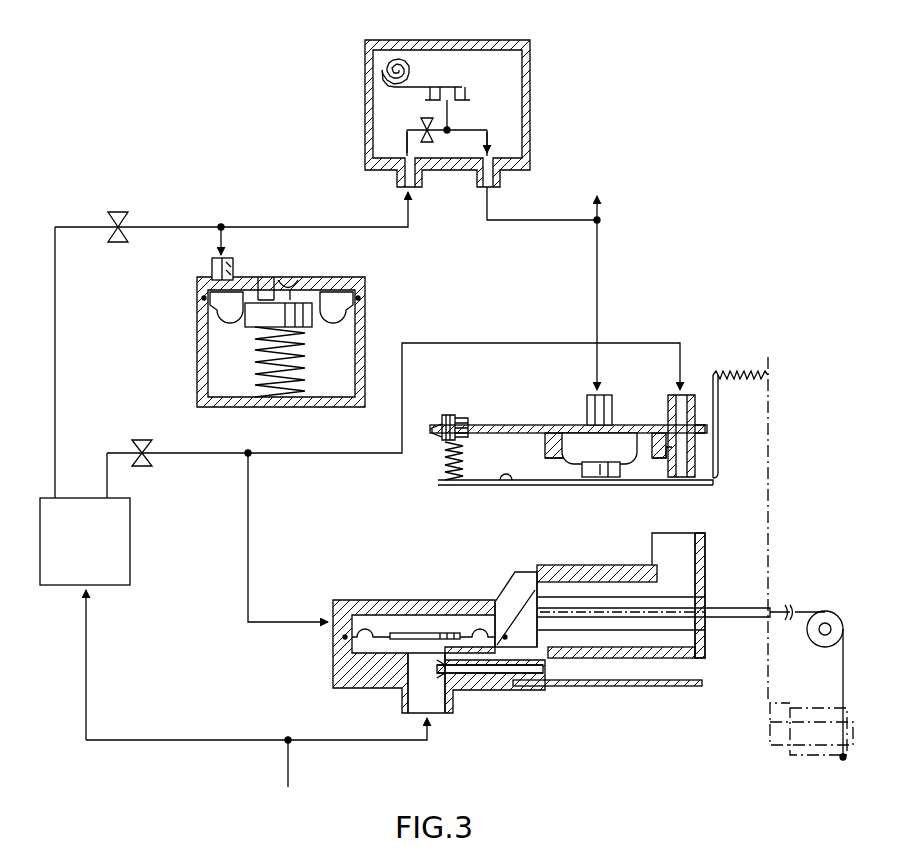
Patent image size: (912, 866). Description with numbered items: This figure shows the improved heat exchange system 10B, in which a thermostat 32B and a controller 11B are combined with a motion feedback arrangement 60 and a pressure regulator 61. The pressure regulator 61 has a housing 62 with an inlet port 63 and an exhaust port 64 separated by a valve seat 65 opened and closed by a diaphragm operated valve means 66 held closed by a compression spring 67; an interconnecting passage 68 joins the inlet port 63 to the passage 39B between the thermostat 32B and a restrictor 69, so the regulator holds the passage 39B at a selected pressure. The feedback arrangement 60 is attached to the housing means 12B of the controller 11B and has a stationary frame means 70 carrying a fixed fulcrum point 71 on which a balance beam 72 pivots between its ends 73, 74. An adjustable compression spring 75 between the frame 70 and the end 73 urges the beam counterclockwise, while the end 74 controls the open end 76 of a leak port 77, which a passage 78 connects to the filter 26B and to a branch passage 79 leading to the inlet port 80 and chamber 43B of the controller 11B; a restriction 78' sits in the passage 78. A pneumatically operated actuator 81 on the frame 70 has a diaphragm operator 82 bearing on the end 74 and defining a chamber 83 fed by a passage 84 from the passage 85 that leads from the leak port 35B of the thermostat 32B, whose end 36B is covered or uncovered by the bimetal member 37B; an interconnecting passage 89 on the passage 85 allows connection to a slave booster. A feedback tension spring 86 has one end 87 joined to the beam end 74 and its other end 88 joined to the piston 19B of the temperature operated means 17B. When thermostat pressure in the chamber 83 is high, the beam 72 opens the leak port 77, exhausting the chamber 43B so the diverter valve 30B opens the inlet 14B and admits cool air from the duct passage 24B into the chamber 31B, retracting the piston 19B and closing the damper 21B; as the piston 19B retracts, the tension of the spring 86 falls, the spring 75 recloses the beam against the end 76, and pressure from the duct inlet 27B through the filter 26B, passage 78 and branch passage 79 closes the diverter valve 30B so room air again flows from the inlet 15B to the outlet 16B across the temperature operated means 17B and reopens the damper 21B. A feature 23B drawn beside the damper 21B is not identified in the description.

The heat exchange system 10B is at (722, 80).
The controller 11B is at (579, 708).
The housing means 12B is at (512, 600).
The inlet 14B is at (402, 700).
The inlet 15B is at (682, 546).
The outlet 16B is at (697, 681).
The temperature operated means 17B is at (690, 590).
The piston 19B is at (745, 618).
The damper 21B is at (816, 760).
The weight outline 23B is at (770, 722).
The duct passage 24B is at (288, 770).
The filter 26B is at (130, 538).
The duct inlet 27B is at (518, 690).
The diverter valve 30B is at (430, 630).
The chamber 31B is at (598, 550).
The thermostat 32B is at (546, 76).
The leak port 35B is at (465, 93).
The end 36B is at (455, 86).
The bimetal member 37B is at (427, 85).
The passage 39B is at (155, 226).
The chamber 43B is at (385, 615).
The motion feedback arrangement 60 is at (720, 346).
The pressure regulator 61 is at (394, 290).
The housing 62 is at (198, 345).
The inlet port 63 is at (212, 270).
The exhaust port 64 is at (288, 290).
The valve seat 65 is at (262, 292).
The diaphragm operated valve means 66 is at (250, 320).
The compression spring 67 is at (270, 360).
The interconnecting passage 68 is at (218, 242).
The restrictor 69 is at (119, 212).
The stationary frame means 70 is at (522, 425).
The fixed fulcrum point 71 is at (502, 491).
The balance beam 72 is at (508, 485).
The end 73 is at (455, 485).
The end 74 is at (720, 478).
The adjustable compression spring 75 is at (440, 465).
The open end 76 is at (680, 478).
The leak port 77 is at (700, 452).
The passage 78 is at (393, 402).
The restriction 78' is at (168, 470).
The branch passage 79 is at (250, 545).
The inlet port 80 is at (343, 612).
The pneumatically operated actuator 81 is at (612, 438).
The diaphragm operator 82 is at (600, 478).
The chamber 83 is at (578, 440).
The passage 84 is at (601, 320).
The passage 85 is at (566, 221).
The feedback tension spring 86 is at (742, 372).
The end 87 is at (713, 373).
The end 88 is at (770, 378).
The interconnecting passage 89 is at (600, 216).